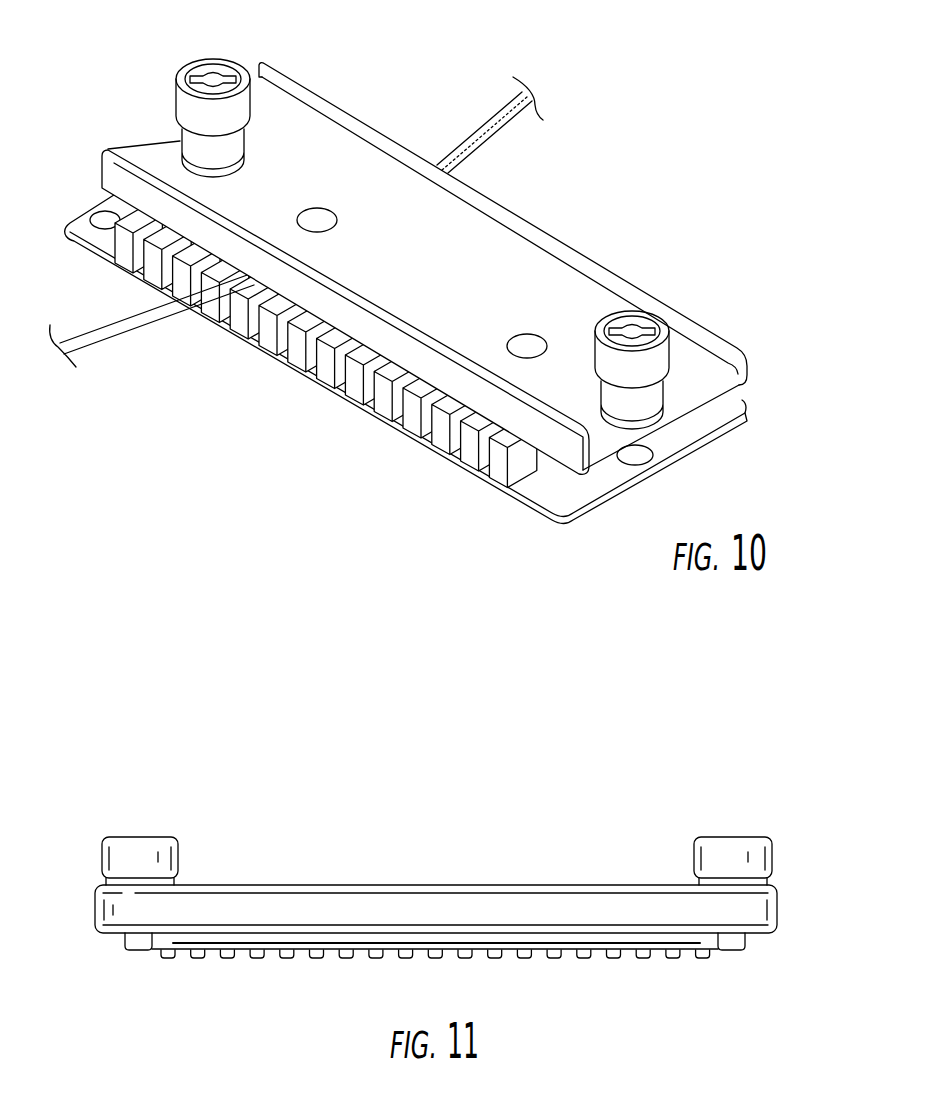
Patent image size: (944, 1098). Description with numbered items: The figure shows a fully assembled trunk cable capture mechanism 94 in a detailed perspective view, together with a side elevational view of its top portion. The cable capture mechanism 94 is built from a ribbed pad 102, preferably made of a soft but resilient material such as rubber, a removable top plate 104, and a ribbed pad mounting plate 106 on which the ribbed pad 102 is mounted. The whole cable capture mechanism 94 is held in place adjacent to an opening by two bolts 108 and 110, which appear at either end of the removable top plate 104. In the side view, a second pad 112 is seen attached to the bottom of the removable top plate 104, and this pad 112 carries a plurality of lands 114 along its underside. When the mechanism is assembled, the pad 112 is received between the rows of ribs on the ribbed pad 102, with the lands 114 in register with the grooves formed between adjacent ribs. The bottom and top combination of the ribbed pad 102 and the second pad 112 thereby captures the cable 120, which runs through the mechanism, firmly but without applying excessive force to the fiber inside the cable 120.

In FIG. 10, the cable capture mechanism 94 is at (582, 186).
In FIG. 10, the ribbed pad 102 is at (283, 337).
In FIG. 10, the removable top plate 104 is at (515, 305).
In FIG. 11, the removable top plate 104 is at (432, 910).
In FIG. 10, the ribbed pad mounting plate 106 is at (552, 502).
In FIG. 10, the bolt 108 is at (197, 60).
In FIG. 10, the bolt 110 is at (652, 331).
In FIG. 11, the second pad 112 is at (185, 944).
In FIG. 11, the lands 114 is at (672, 960).
In FIG. 10, the cable 120 is at (498, 112).